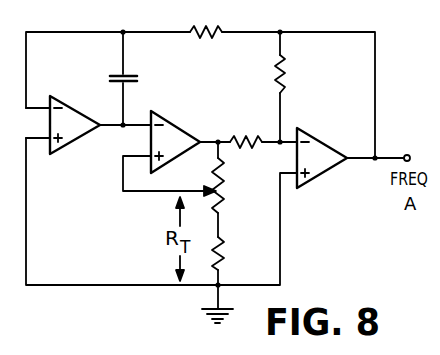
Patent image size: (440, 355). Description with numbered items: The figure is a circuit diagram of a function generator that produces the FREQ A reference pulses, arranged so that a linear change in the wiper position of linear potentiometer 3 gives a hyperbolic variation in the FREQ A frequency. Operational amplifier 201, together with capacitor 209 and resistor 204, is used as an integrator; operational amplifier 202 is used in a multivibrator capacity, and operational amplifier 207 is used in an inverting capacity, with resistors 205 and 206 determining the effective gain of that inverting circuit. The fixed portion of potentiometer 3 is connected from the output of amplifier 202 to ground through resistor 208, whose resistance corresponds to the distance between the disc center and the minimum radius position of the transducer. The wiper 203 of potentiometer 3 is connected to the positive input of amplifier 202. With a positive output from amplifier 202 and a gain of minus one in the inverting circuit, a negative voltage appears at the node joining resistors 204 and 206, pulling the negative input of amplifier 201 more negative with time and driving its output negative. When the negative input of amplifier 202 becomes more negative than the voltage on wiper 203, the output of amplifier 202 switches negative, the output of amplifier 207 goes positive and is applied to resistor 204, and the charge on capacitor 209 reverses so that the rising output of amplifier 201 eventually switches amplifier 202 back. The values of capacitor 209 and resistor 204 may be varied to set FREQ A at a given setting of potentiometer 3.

The operational amplifier 201 is at (76, 134).
The operational amplifier 202 is at (177, 131).
The wiper 203 is at (148, 188).
The resistor 204 is at (210, 39).
The resistor 205 is at (261, 135).
The resistor 206 is at (283, 82).
The operational amplifier 207 is at (320, 148).
The resistor 208 is at (228, 251).
The capacitor 209 is at (114, 75).
The linear potentiometer 3 is at (227, 181).